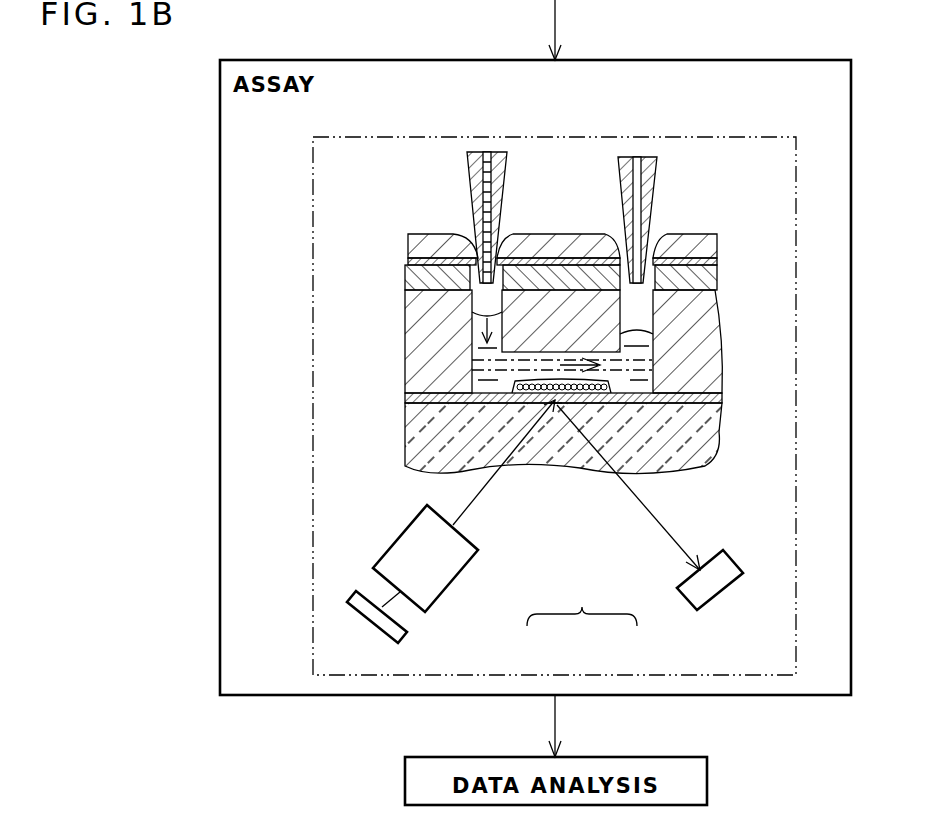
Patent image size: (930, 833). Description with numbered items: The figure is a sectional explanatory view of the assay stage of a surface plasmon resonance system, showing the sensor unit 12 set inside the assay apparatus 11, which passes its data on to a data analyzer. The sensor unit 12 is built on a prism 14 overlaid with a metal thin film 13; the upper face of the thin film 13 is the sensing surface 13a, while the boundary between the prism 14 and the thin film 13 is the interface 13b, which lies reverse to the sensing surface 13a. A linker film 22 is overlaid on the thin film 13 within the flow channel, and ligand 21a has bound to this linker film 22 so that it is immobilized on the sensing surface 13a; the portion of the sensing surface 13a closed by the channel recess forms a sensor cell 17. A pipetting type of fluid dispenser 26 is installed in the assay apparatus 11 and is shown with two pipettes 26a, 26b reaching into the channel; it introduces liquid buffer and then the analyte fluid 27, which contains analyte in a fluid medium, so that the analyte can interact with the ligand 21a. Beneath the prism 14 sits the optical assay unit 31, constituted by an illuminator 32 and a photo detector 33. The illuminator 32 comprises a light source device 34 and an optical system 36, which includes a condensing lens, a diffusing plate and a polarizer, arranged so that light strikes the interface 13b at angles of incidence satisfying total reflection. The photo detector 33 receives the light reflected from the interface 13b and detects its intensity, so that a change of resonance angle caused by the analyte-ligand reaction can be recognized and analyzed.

The assay apparatus 11 is at (313, 346).
The sensor unit 12 is at (762, 222).
The thin film 13 is at (731, 400).
The sensing surface 13a is at (512, 390).
The interface 13b is at (552, 401).
The prism 14 is at (703, 445).
The sensor cell 17 is at (664, 357).
The ligand 21a is at (514, 380).
The linker film 22 is at (665, 388).
The fluid dispenser 26 is at (503, 194).
The first pipette 26a is at (503, 232).
The second pipette 26b is at (622, 232).
The analyte fluid 27 is at (640, 342).
The optical assay unit 31 is at (533, 529).
The illuminator 32 is at (444, 529).
The photo detector 33 is at (686, 600).
The light source device 34 is at (355, 594).
The optical system 36 is at (398, 538).